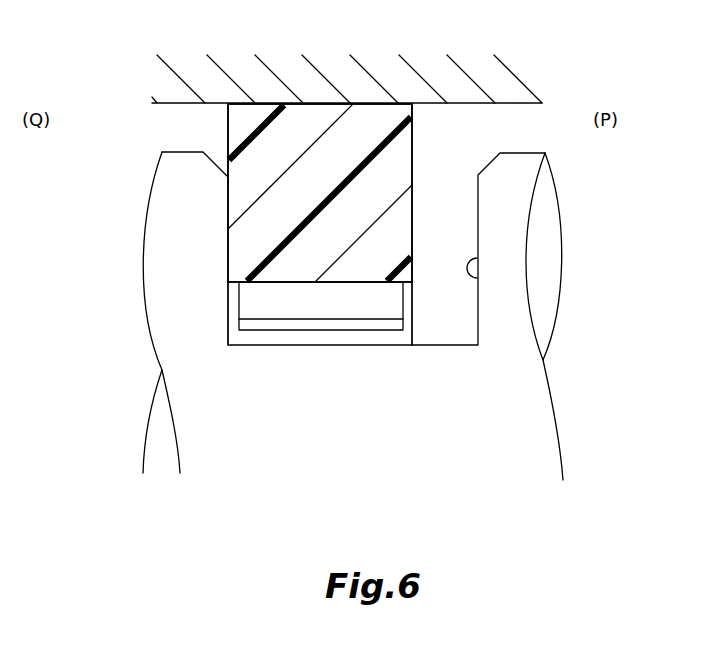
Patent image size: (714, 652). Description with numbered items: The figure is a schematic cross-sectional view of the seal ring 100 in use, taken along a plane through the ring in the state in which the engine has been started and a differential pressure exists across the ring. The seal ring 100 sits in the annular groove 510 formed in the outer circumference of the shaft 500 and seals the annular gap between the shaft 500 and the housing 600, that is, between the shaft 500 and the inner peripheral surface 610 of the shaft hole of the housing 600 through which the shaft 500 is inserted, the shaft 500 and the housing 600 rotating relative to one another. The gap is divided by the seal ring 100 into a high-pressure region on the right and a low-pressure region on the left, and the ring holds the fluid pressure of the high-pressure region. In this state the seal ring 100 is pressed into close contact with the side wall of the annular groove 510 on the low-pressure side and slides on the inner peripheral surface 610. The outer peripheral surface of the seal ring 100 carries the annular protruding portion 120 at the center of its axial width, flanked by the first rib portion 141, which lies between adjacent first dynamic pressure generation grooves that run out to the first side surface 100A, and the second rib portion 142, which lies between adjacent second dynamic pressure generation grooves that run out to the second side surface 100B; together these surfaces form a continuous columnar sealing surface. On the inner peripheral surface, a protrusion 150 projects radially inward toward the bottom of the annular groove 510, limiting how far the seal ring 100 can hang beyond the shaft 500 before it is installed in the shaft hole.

The seal ring 100 is at (442, 217).
The first side surface 100A is at (412, 183).
The second side surface 100B is at (228, 258).
The protruding portion 120 is at (330, 103).
The first rib portion 141 is at (378, 103).
The second rib portion 142 is at (265, 103).
The protrusion 150 is at (340, 305).
The shaft 500 is at (353, 316).
The annular groove 510 is at (468, 277).
The housing 600 is at (347, 61).
The inner peripheral surface 610 is at (528, 113).